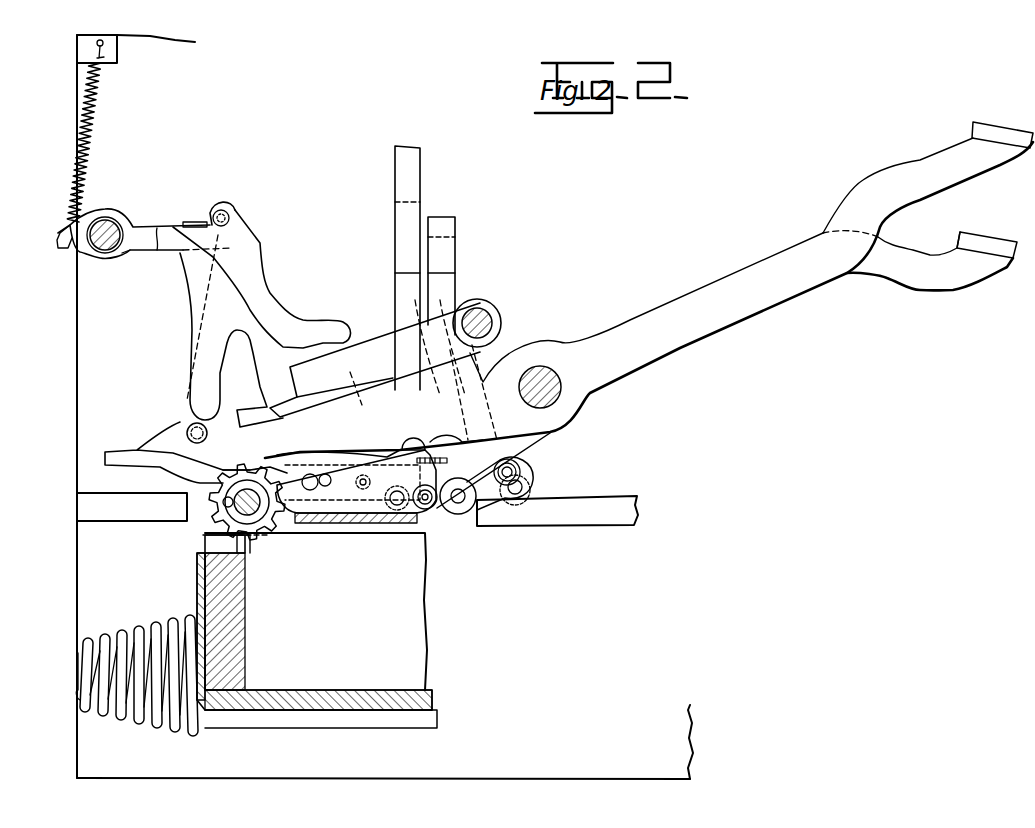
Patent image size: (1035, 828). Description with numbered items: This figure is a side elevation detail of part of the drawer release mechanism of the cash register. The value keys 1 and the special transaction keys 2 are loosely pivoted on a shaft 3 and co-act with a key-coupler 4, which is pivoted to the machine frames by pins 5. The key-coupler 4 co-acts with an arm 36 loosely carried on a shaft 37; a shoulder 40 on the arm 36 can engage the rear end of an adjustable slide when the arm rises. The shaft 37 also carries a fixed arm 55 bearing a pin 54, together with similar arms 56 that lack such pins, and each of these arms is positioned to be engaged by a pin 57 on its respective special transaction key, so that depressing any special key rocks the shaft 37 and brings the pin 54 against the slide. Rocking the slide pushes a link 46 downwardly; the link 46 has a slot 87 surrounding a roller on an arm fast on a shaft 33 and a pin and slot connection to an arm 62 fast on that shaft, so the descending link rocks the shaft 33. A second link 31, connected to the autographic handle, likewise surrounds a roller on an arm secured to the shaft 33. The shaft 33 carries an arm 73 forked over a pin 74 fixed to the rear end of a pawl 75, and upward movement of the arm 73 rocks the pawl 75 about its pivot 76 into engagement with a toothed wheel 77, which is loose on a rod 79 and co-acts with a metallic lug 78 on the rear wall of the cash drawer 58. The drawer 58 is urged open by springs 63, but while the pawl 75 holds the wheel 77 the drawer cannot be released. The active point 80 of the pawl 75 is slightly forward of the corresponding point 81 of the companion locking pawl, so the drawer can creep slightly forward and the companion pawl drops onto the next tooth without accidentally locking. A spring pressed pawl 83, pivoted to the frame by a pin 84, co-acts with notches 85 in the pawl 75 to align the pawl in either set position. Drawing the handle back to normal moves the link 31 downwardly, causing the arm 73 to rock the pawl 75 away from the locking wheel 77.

The value keys 1 is at (935, 283).
The special transaction keys 2 is at (920, 161).
The shaft 3 is at (558, 388).
The key-coupler 4 is at (384, 344).
The pins 5 is at (490, 316).
The link 31 is at (398, 175).
The shaft 33 is at (478, 495).
The arm 36 is at (297, 285).
The shaft 37 is at (109, 225).
The shoulder 40 is at (192, 207).
The link 46 is at (442, 228).
The pin 54 is at (229, 211).
The arm 55 is at (200, 342).
The arms 56 is at (126, 256).
The pin 57 is at (190, 424).
The cash drawer 58 is at (222, 592).
The arm 62 is at (521, 462).
The springs 63 is at (172, 722).
The arm 73 is at (445, 508).
The pin 74 is at (393, 508).
The pawl 75 is at (268, 445).
The pivot 76 is at (322, 490).
The toothed wheel 77 is at (210, 512).
The lug 78 is at (225, 535).
The rod 79 is at (228, 498).
The active point 80 is at (180, 453).
The point 81 is at (250, 470).
The spring pressed pawl 83 is at (415, 440).
The pin 84 is at (448, 514).
The notches 85 is at (403, 445).
The slot 87 is at (524, 486).